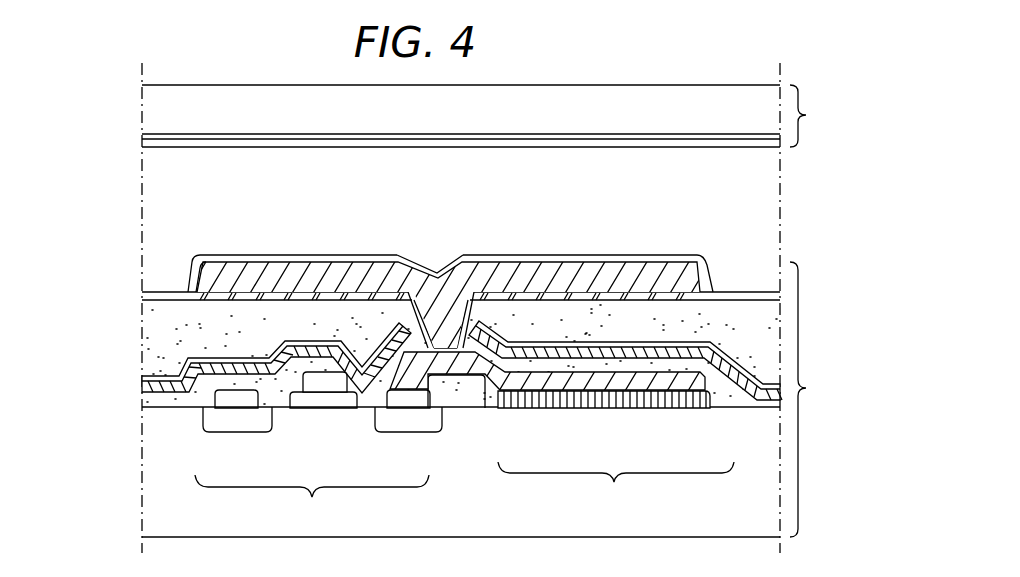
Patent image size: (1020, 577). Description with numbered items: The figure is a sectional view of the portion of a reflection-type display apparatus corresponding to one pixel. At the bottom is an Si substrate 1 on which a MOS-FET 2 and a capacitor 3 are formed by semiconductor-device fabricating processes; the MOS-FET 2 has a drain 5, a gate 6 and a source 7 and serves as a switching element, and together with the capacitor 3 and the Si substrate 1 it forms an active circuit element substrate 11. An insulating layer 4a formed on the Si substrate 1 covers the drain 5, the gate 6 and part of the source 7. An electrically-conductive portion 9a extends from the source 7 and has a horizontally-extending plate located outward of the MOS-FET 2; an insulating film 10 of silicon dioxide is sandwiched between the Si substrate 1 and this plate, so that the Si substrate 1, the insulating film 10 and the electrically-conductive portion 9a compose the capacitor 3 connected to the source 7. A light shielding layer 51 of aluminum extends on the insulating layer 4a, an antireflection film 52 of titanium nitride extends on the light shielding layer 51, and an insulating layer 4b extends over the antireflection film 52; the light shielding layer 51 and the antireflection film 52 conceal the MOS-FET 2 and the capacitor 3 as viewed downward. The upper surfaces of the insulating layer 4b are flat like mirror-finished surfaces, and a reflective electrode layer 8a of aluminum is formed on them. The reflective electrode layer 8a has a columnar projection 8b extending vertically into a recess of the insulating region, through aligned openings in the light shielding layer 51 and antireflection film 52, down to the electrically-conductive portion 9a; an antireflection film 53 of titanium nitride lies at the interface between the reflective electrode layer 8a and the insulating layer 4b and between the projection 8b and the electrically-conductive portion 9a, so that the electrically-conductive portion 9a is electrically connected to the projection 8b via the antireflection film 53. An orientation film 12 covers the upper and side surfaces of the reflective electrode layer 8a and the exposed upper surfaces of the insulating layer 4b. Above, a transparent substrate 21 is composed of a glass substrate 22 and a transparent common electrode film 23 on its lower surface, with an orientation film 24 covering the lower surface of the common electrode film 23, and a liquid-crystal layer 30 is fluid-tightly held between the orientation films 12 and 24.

The Si substrate 1 is at (152, 498).
The MOS-FET 2 is at (312, 498).
The capacitor 3 is at (614, 483).
The insulating layer 4a is at (165, 408).
The insulating layer 4b is at (143, 303).
The drain 5 is at (227, 422).
The gate 6 is at (317, 403).
The source 7 is at (403, 422).
The reflective electrode layer 8a is at (212, 260).
The columnar projection 8b is at (440, 272).
The electrically-conductive portion 9a is at (481, 398).
The insulating film 10 is at (642, 401).
The active circuit element substrate 11 is at (812, 388).
The orientation film 12 is at (195, 266).
The transparent substrate 21 is at (812, 113).
The glass substrate 22 is at (148, 100).
The common electrode film 23 is at (157, 135).
The orientation film 24 is at (752, 147).
The liquid-crystal layer 30 is at (757, 214).
The light shielding layer 51 is at (148, 388).
The antireflection film 52 is at (143, 379).
The antireflection film 53 is at (690, 301).